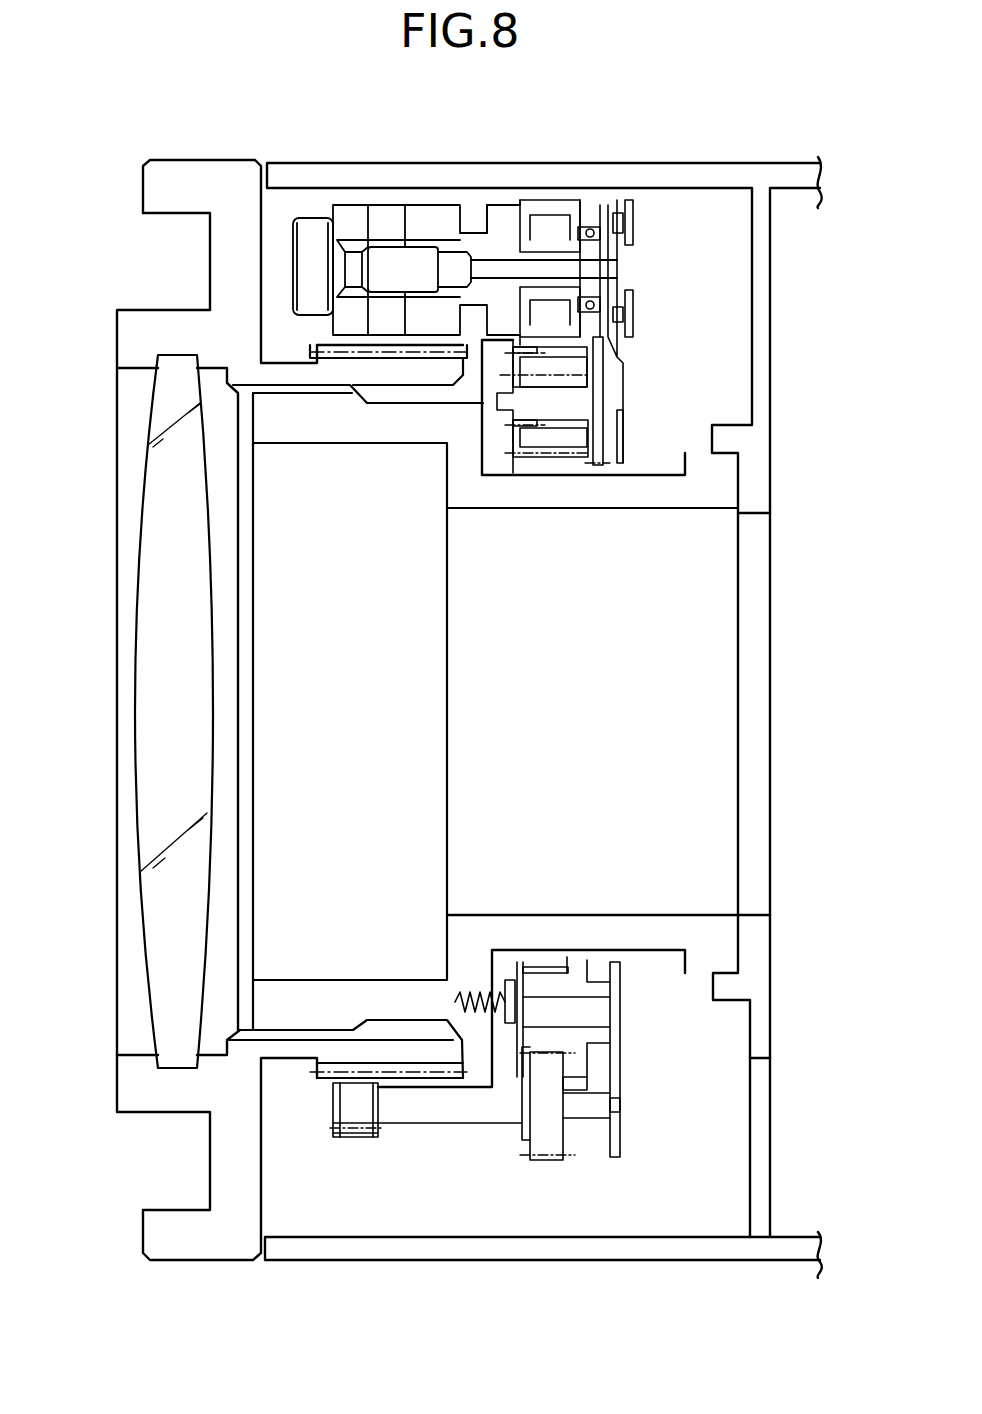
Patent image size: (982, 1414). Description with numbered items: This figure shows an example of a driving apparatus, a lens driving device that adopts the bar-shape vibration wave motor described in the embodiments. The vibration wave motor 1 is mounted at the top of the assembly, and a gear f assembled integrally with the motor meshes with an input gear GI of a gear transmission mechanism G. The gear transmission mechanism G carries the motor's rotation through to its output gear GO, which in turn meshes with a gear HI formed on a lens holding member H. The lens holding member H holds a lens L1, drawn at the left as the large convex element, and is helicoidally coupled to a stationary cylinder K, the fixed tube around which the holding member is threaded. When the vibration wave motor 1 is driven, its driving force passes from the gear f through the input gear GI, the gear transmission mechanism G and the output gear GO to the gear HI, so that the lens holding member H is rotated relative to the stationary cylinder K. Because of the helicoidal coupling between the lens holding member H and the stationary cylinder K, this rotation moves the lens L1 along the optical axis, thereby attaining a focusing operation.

The motor 1 is at (386, 215).
The gear f is at (593, 215).
The gear transmission mechanism G is at (628, 413).
The input gear GI is at (603, 437).
The output gear GO is at (352, 1137).
The lens holding member H is at (188, 1247).
The gear HI is at (313, 1080).
The stationary cylinder K is at (322, 992).
The lens L1 is at (155, 975).